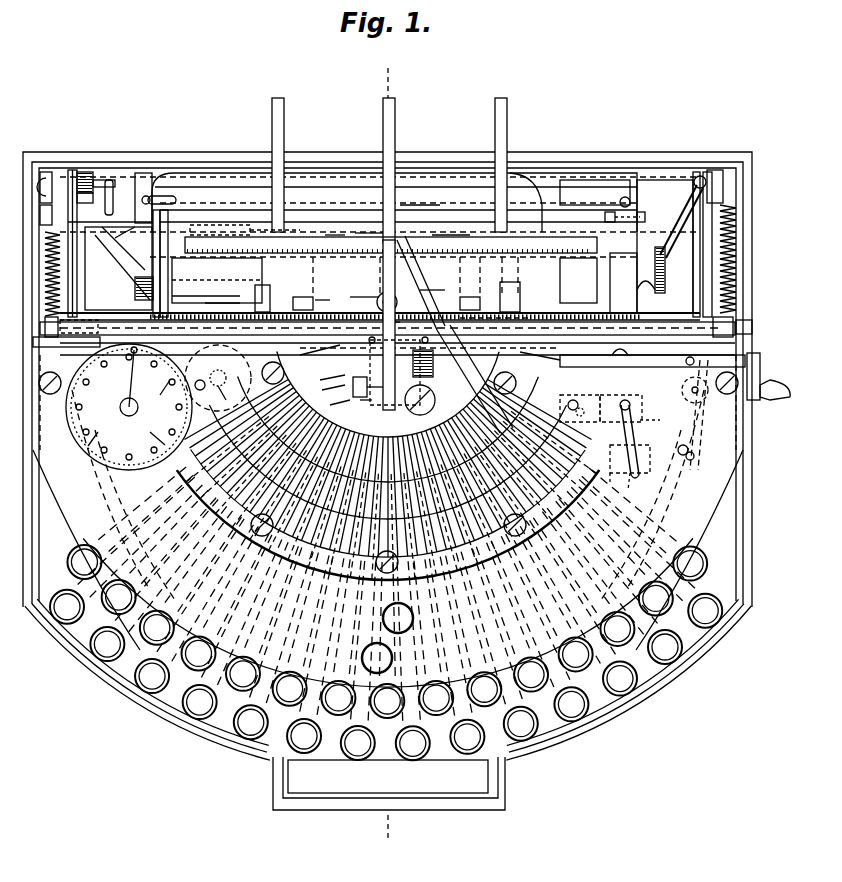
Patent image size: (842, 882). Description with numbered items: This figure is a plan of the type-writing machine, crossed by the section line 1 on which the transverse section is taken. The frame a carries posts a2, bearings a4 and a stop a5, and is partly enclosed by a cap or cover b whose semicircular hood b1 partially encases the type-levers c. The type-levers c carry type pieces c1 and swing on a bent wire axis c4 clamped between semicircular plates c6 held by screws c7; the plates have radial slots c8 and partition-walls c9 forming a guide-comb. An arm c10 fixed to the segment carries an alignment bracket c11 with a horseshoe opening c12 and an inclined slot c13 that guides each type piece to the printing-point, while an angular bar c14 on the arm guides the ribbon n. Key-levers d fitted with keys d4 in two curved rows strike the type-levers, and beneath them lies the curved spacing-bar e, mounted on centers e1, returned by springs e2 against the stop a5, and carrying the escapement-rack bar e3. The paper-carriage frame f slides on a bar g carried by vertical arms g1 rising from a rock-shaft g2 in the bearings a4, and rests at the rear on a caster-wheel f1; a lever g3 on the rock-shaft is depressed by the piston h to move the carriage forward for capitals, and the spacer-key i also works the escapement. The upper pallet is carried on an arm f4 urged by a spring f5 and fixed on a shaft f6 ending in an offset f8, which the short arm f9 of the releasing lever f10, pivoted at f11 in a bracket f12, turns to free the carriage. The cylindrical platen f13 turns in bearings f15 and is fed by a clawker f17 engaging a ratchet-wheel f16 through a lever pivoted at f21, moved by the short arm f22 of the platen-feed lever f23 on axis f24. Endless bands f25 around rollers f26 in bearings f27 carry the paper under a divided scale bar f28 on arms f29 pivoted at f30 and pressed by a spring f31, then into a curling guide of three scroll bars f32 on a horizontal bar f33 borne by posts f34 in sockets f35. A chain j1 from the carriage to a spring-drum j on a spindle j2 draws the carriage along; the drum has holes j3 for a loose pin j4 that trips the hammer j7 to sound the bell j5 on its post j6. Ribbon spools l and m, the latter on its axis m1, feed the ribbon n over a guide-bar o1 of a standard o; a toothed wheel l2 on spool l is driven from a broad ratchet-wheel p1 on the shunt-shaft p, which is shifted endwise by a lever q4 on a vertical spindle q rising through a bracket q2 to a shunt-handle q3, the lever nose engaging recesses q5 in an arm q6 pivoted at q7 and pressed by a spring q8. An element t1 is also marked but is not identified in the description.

The section line 1 is at (387, 455).
The frame a is at (175, 162).
The posts a2 is at (397, 347).
The bearings a4 is at (752, 328).
The stop a5 is at (693, 402).
The cap or cover b is at (388, 543).
The semicircular hood or shield b1 is at (421, 421).
The type-levers c is at (388, 340).
The type pieces or blocks c1 is at (464, 408).
The axis wire c4 is at (314, 308).
The segmental slotted plates c6 is at (340, 399).
The screws c7 is at (428, 357).
The radial slots c8 is at (329, 386).
The partition-walls c9 is at (327, 372).
The arm c10 is at (435, 286).
The alignment bracket c11 is at (363, 288).
The horseshoe opening c12 is at (400, 296).
The guide slot c13 is at (380, 296).
The angular bar c14 is at (369, 226).
The key-levers d is at (388, 515).
The keys d4 is at (70, 556).
The curved spacing-bar e is at (393, 490).
The centers of motion e1 is at (70, 170).
The springs e2 is at (391, 246).
The escapement-rack bar e3 is at (681, 240).
The paper-carriage frame f is at (520, 303).
The caster-wheel f1 is at (154, 327).
The pallet arm f4 is at (217, 272).
The spring f5 is at (133, 287).
The shaft or spindle f6 is at (322, 200).
The offset f8 is at (157, 210).
The short arm f9 is at (110, 180).
The pallet-releasing lever f10 is at (46, 172).
The axis of motion f11 is at (100, 180).
The bracket f12 is at (84, 193).
The cylindrical platen f13 is at (384, 280).
The bearings f15 is at (672, 246).
The ratchet-wheel f16 is at (206, 289).
The clawker or driver f17 is at (182, 223).
The axis of motion f21 is at (267, 218).
The short arm f22 is at (110, 266).
The platen-feed lever f23 is at (335, 227).
The axis f24 is at (380, 325).
The endless bands f25 is at (387, 296).
The rollers f26 is at (454, 251).
The bearings f27 is at (255, 300).
The divided scale bar f28 is at (608, 227).
The arms f29 is at (165, 215).
The axes of motion f30 is at (654, 216).
The spring f31 is at (363, 256).
The curling guide bars f32 is at (399, 170).
The horizontal bar f33 is at (595, 192).
The legs or posts f34 is at (627, 198).
The sockets f35 is at (420, 196).
The carriage bar g is at (387, 329).
The vertical arms g1 is at (720, 327).
The rock-shaft g2 is at (652, 354).
The lever g3 is at (430, 352).
The capital piston h is at (392, 658).
The spacer-key i is at (388, 776).
The spring-drum j is at (129, 407).
The chain j1 is at (158, 389).
The vertical spindle j2 is at (129, 416).
The holes j3 is at (112, 396).
The loose pin j4 is at (155, 423).
The bell or gong j5 is at (218, 378).
The post j6 is at (216, 386).
The hammer or striker j7 is at (201, 371).
The ribbon-spool l is at (396, 363).
The spur toothed wheel l2 is at (395, 377).
The ribbon-spool m is at (475, 379).
The spool shaft or axis m1 is at (495, 326).
The inking-ribbon n is at (417, 301).
The standard o is at (424, 341).
The guide-bar o1 is at (374, 333).
The shunt-shaft p is at (385, 392).
The broad ratchet-wheel p1 is at (402, 325).
The vertical spindle q is at (632, 407).
The bracket q2 is at (650, 426).
The shunt-handle q3 is at (635, 464).
The lever q4 is at (623, 398).
The recesses or stops q5 is at (613, 485).
The recessed arm q6 is at (636, 488).
The axis of motion q7 is at (702, 426).
The spring q8 is at (680, 468).
The pin t1 is at (364, 406).